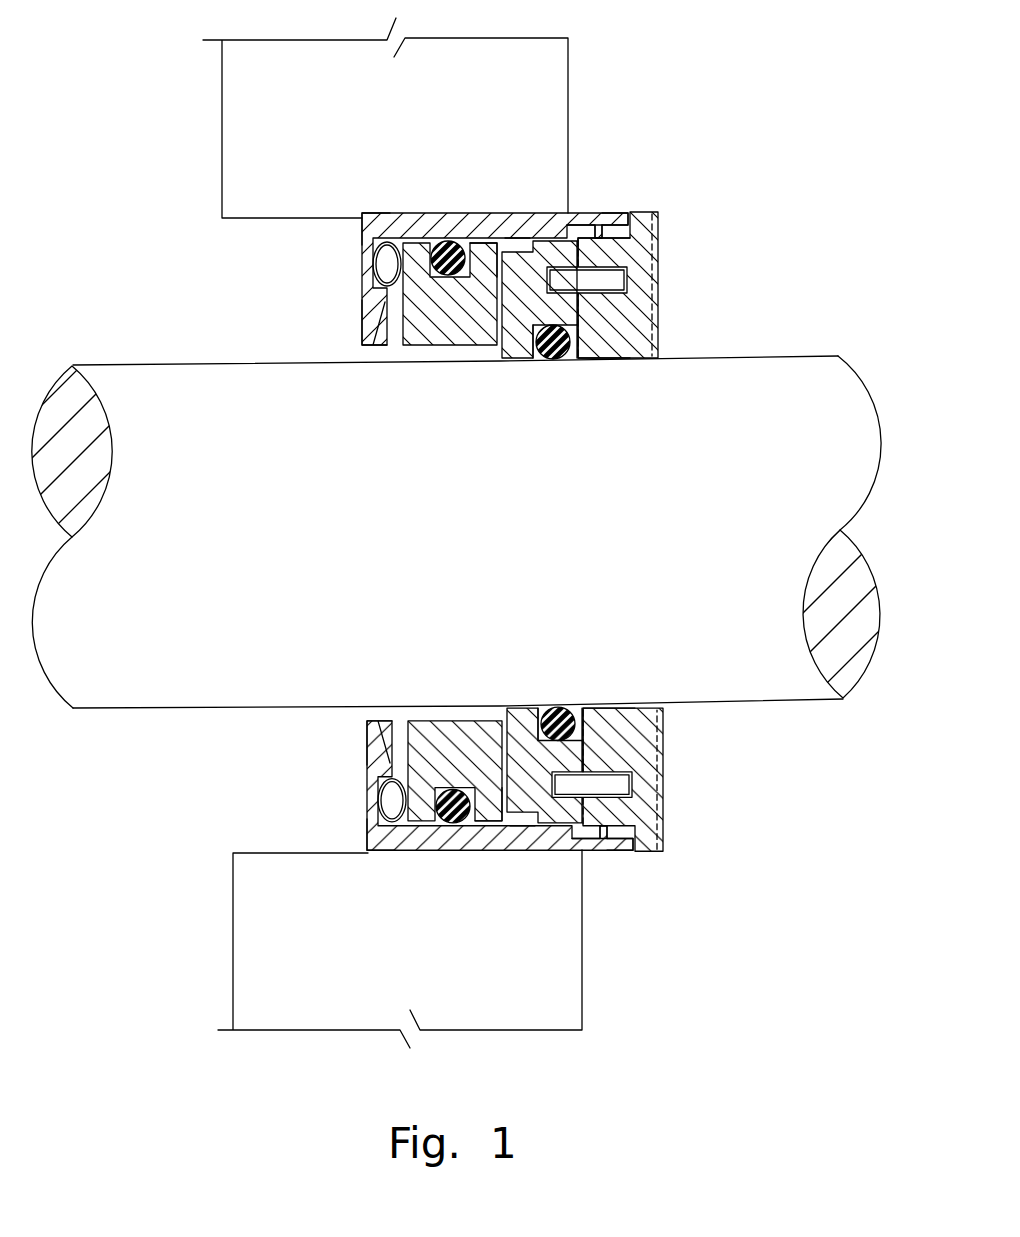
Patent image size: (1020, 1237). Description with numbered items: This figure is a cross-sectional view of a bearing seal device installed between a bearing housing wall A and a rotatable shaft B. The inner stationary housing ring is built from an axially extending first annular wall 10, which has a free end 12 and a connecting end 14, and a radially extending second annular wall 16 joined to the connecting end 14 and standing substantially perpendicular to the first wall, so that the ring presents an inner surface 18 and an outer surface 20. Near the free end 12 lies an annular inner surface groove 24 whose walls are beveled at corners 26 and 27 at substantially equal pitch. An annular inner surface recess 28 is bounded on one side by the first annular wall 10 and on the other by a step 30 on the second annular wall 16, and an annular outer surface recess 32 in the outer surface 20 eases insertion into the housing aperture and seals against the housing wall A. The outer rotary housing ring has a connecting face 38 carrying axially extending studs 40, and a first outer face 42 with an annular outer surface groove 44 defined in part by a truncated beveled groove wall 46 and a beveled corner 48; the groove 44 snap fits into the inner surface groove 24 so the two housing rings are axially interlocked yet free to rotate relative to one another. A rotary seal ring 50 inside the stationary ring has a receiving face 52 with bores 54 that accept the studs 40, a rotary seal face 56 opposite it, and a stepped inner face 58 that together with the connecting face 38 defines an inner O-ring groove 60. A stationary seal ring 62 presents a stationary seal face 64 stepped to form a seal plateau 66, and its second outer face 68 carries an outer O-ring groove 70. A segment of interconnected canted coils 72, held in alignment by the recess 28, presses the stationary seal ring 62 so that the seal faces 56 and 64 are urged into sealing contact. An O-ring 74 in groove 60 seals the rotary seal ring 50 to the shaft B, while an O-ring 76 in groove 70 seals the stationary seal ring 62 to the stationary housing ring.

The bearing housing wall A is at (250, 123).
The rotatable shaft B is at (213, 387).
The first annular wall 10 is at (482, 214).
The free end 12 is at (623, 843).
The connecting end 14 is at (368, 845).
The second annular wall 16 is at (376, 266).
The inner surface 18 is at (405, 242).
The outer surface 20 is at (442, 214).
The annular inner surface groove 24 is at (594, 224).
The beveled corner 26 is at (625, 232).
The beveled corner 27 is at (560, 214).
The annular inner surface recess 28 is at (368, 775).
The step 30 is at (368, 322).
The annular outer surface recess 32 is at (377, 213).
The connecting face 38 is at (573, 360).
The studs 40 is at (580, 285).
The first outer face 42 is at (648, 212).
The annular outer surface groove 44 is at (660, 823).
The beveled groove wall 46 is at (622, 263).
The beveled corner 48 is at (573, 848).
The rotary seal ring 50 is at (522, 710).
The receiving face 52 is at (623, 712).
The bores 54 is at (540, 830).
The rotary seal face 56 is at (500, 358).
The inner face 58 is at (555, 362).
The inner O-ring groove 60 is at (518, 214).
The stationary seal ring 62 is at (395, 718).
The stationary seal face 64 is at (512, 830).
The seal plateau 66 is at (462, 718).
The second outer face 68 is at (428, 837).
The outer O-ring groove 70 is at (440, 278).
The canted coils 72 is at (397, 852).
The O-ring 74 is at (567, 707).
The O-ring 76 is at (472, 830).